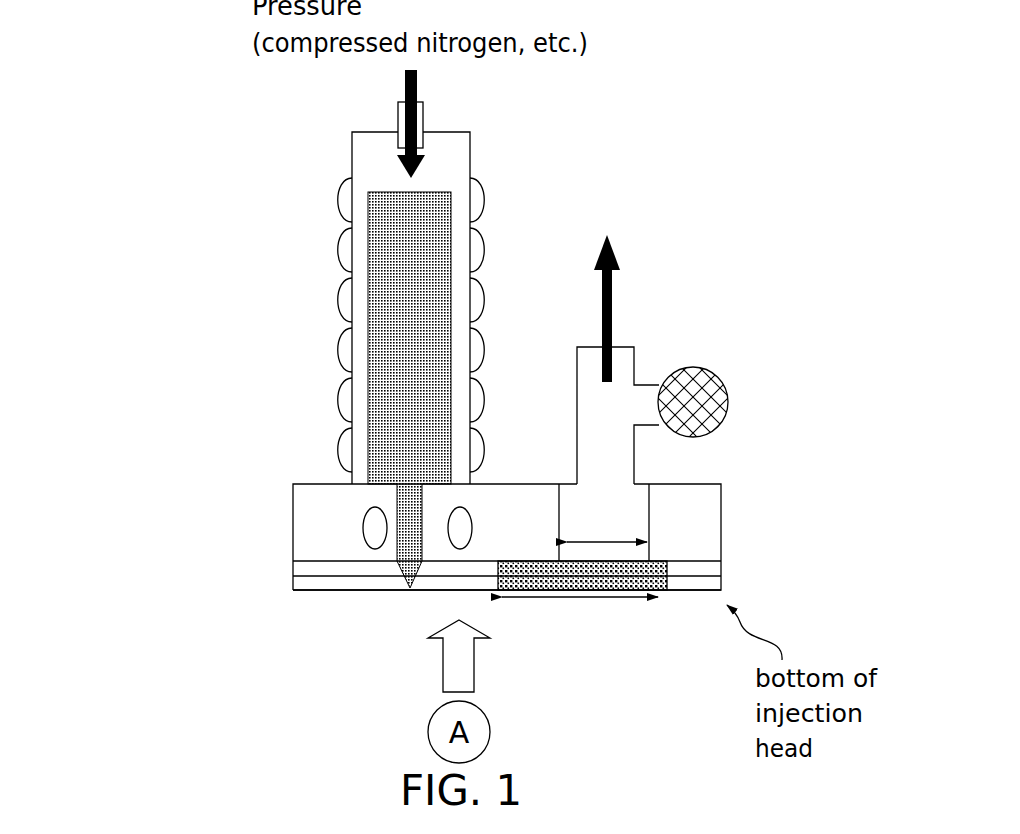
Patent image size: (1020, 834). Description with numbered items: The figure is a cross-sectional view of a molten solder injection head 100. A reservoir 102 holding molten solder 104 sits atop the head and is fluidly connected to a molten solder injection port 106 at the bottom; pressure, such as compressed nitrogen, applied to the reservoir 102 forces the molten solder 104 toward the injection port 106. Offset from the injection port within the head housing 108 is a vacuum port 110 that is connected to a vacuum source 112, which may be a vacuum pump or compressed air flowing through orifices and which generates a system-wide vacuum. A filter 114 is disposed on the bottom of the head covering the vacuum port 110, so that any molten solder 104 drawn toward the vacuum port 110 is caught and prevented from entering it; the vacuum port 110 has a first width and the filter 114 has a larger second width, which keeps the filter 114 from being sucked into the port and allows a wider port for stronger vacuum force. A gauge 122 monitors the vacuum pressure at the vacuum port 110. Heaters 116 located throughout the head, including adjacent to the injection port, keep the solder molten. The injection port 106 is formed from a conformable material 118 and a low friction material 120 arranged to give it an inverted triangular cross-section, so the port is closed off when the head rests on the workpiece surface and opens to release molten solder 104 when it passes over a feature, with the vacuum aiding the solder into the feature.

The molten solder injection head 100 is at (724, 90).
The reservoir 102 is at (367, 320).
The molten solder 104 is at (396, 410).
The molten solder injection port 106 is at (406, 597).
The head housing 108 is at (292, 517).
The vacuum port 110 is at (628, 559).
The vacuum source 112 is at (626, 324).
The filter 114 is at (589, 581).
The heaters 116 is at (338, 195).
The conformable material 118 is at (292, 570).
The low friction material 120 is at (292, 592).
The gauge 122 is at (741, 390).